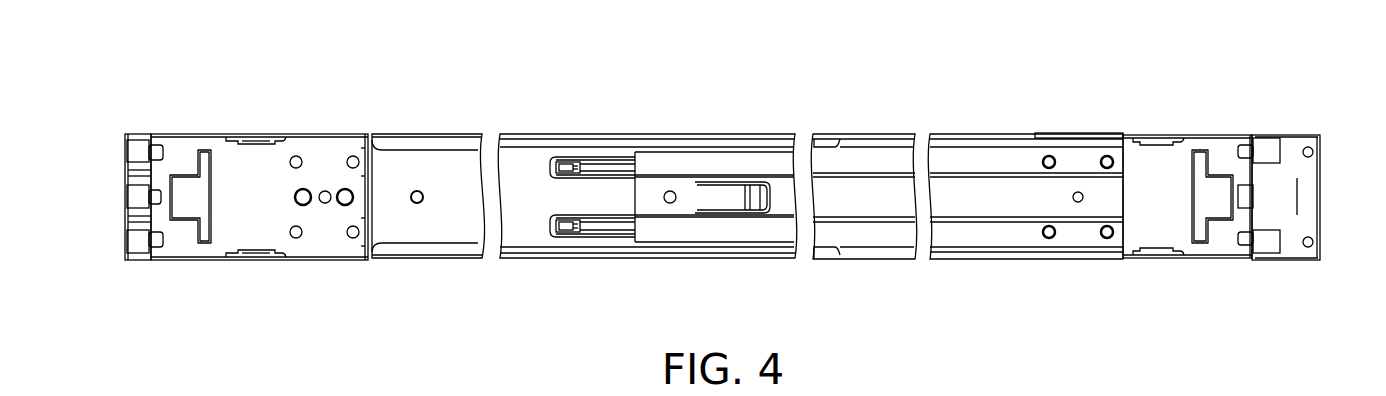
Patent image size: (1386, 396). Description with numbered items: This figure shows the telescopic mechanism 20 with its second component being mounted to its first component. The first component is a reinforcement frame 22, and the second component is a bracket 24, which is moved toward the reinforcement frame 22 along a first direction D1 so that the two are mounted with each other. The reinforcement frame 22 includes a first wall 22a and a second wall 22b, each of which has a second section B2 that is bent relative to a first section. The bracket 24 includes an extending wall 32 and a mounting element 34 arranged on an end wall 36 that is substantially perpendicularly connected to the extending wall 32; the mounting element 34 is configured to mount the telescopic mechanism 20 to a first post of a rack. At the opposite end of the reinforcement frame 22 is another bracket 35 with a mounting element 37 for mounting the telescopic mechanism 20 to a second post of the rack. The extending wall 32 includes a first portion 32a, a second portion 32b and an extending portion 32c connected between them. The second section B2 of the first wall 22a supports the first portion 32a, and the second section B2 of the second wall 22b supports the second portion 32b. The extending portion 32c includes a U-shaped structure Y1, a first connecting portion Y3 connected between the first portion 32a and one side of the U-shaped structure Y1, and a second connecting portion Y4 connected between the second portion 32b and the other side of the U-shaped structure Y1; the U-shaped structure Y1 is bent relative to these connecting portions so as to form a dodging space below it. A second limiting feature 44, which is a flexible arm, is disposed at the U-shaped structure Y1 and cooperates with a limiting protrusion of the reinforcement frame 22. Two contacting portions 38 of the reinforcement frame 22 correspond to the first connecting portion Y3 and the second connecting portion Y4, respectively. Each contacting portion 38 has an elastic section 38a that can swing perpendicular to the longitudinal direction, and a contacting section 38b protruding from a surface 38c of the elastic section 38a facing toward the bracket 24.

The telescopic mechanism 20 is at (708, 68).
The reinforcement frame 22 is at (514, 134).
The first wall 22a is at (721, 134).
The second wall 22b is at (633, 258).
The bracket 24 is at (1003, 110).
The extending wall 32 is at (967, 131).
The first portion 32a is at (945, 146).
The second portion 32b is at (968, 246).
The extending portion 32c is at (853, 70).
The mounting element 34 is at (1275, 137).
The another bracket 35 is at (300, 138).
The end wall 36 is at (1253, 195).
The mounting element 37 is at (147, 137).
The contacting portion 38 is at (588, 158).
The elastic section 38a is at (610, 166).
The contacting section 38b is at (568, 165).
The surface 38c is at (574, 165).
The second limiting feature 44 is at (738, 210).
The second section B2 is at (762, 145).
The U-shaped structure Y1 is at (858, 190).
The first connecting portion Y3 is at (880, 155).
The second connecting portion Y4 is at (832, 228).
The first direction D1 is at (1048, 107).